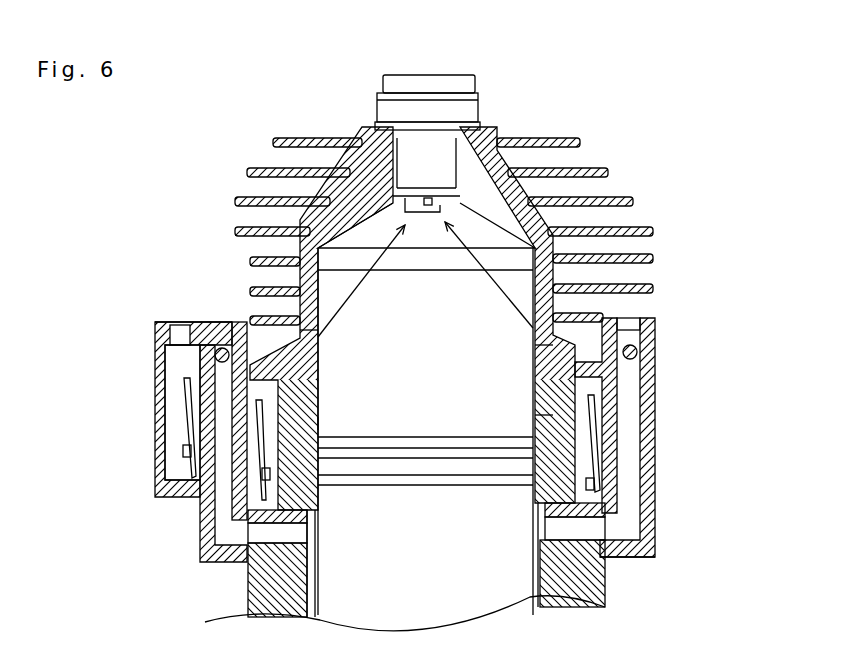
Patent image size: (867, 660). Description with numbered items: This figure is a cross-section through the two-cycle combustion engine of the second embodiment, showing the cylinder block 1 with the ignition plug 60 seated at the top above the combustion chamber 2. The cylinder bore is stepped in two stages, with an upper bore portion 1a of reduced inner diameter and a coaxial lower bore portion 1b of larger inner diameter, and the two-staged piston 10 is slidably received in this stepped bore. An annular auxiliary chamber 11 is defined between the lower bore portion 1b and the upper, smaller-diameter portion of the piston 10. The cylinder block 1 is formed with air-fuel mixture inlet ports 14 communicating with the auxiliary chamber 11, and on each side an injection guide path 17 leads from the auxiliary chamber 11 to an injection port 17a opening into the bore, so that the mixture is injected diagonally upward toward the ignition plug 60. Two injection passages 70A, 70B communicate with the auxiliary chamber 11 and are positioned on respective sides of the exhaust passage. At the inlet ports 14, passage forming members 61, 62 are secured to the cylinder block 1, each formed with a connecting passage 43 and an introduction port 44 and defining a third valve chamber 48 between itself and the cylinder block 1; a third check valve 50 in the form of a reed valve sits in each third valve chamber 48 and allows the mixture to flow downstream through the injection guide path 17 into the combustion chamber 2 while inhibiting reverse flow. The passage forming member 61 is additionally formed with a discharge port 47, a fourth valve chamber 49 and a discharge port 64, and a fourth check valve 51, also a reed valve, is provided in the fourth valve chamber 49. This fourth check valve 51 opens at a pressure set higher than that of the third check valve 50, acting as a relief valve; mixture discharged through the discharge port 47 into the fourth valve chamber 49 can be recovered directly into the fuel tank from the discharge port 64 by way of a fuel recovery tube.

The cylinder block 1 is at (550, 226).
The upper bore portion 1a is at (556, 270).
The lower bore portion 1b is at (303, 610).
The combustion chamber 2 is at (468, 236).
The piston 10 is at (487, 592).
The auxiliary chamber 11 is at (313, 573).
The air-fuel mixture inlet port 14 is at (285, 532).
The injection guide path 17 is at (262, 330).
The injection port 17a is at (318, 338).
The connecting passage 43 is at (223, 500).
The introduction port 44 is at (258, 405).
The discharge port 47 is at (160, 338).
The third valve chamber 48 is at (220, 347).
The fourth valve chamber 49 is at (165, 370).
The third check valve 50 is at (318, 417).
The fourth check valve 51 is at (186, 388).
The ignition plug 60 is at (432, 203).
The passage forming member 61 is at (178, 320).
The passage forming member 62 is at (657, 327).
The discharge port 64 is at (172, 322).
The injection passage 70A is at (230, 535).
The injection passage 70B is at (618, 527).